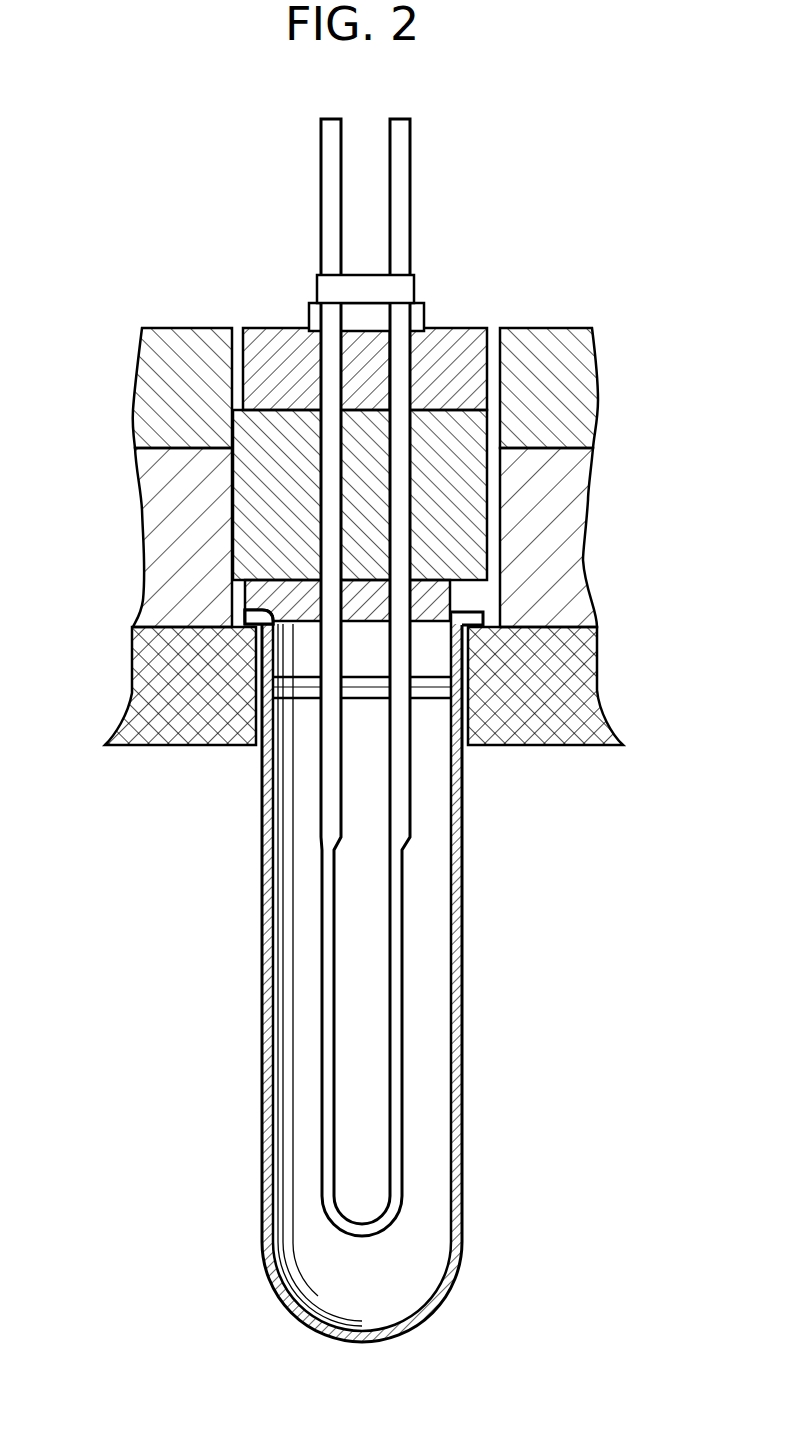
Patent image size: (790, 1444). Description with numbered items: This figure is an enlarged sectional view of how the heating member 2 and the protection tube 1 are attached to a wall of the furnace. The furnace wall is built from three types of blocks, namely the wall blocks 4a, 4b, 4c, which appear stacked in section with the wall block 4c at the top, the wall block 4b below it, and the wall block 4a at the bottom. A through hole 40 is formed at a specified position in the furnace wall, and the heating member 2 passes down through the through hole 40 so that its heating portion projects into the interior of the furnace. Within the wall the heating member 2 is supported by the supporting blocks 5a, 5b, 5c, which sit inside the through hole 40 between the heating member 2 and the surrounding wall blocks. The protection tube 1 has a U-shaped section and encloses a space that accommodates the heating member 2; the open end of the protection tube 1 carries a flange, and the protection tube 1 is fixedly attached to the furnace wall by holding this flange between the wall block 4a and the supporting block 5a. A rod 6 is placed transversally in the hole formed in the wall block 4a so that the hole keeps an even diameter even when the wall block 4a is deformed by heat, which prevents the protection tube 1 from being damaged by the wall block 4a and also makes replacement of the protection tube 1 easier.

The protection tube 1 is at (463, 838).
The heating member 2 is at (398, 238).
The wall block 4a is at (568, 680).
The wall block 4b is at (570, 533).
The wall block 4c is at (572, 388).
The supporting block 5a is at (232, 568).
The supporting block 5b is at (233, 417).
The supporting block 5c is at (277, 330).
The rod 6 is at (304, 692).
The through hole 40 is at (485, 370).